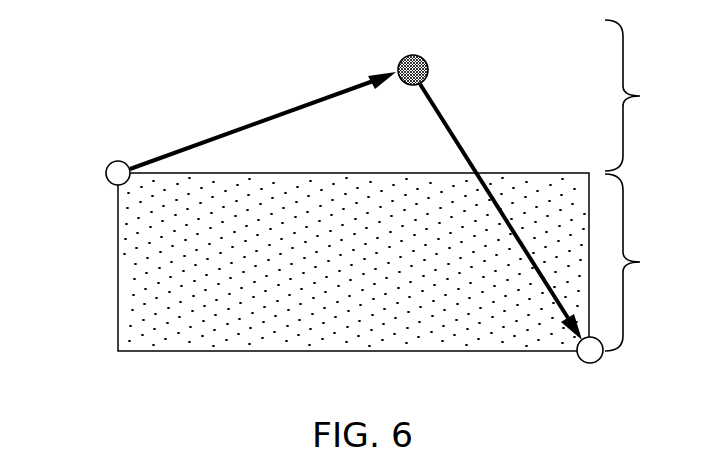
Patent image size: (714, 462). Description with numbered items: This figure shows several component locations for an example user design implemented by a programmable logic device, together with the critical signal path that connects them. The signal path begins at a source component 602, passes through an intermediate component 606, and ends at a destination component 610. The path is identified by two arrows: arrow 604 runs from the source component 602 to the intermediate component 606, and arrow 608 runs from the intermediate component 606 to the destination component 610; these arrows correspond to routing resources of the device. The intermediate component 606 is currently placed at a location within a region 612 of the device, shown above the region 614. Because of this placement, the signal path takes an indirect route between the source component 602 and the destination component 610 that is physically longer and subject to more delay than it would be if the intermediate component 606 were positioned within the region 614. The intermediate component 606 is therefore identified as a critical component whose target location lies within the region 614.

The source component 602 is at (106, 170).
The arrow 604 is at (270, 116).
The intermediate component 606 is at (425, 60).
The arrow 608 is at (455, 137).
The destination component 610 is at (592, 364).
The region 612 is at (644, 95).
The region 614 is at (646, 262).